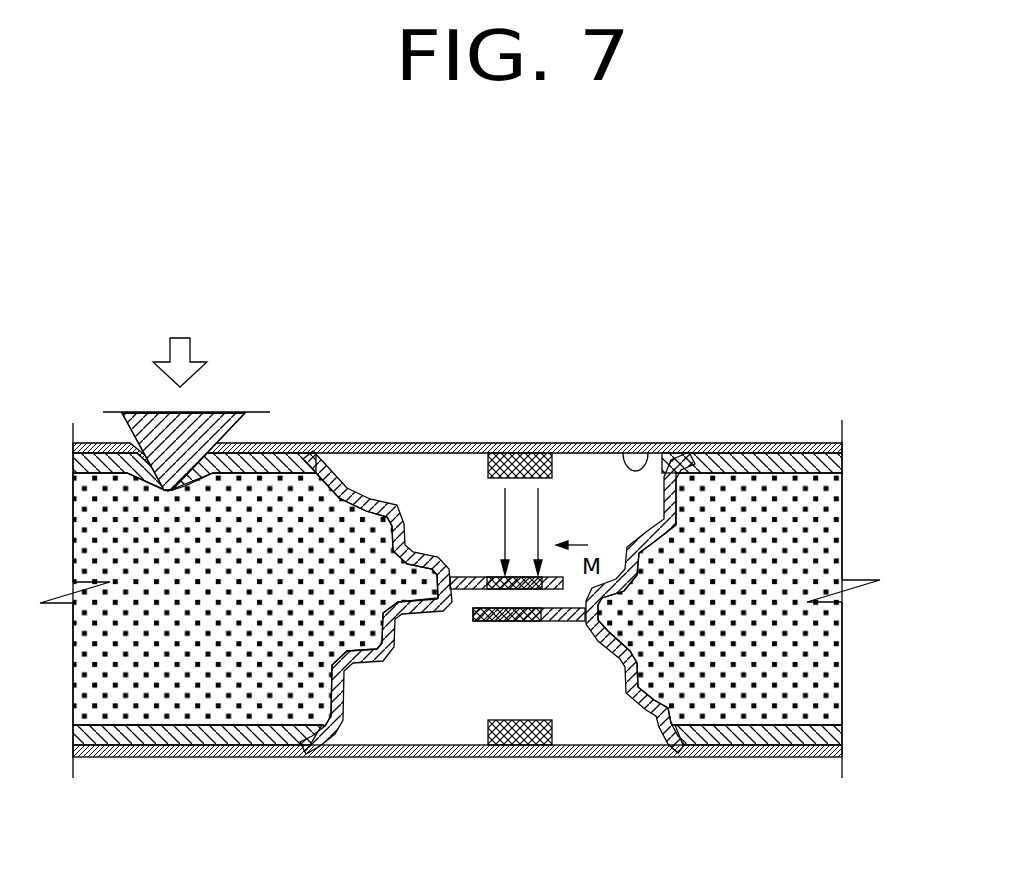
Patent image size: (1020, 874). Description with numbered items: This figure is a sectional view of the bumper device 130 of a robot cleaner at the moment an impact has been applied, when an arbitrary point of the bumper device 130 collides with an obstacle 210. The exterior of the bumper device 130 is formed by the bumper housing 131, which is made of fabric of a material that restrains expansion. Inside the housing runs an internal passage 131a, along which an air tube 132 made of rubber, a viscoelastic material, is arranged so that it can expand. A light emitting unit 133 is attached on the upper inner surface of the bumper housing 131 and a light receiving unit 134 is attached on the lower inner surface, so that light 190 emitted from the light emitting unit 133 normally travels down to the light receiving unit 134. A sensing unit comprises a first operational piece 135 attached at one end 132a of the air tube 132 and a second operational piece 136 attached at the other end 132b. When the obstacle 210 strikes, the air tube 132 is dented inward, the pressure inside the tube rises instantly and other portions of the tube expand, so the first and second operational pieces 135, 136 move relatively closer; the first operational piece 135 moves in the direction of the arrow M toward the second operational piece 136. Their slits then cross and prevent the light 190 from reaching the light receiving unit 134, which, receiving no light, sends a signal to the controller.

The bumper device 130 is at (805, 338).
The bumper housing 131 is at (457, 391).
The internal passage 131a is at (667, 470).
The air tube 132 is at (378, 505).
The one end of the air tube 132a is at (452, 608).
The other end of the air tube 132b is at (585, 636).
The light emitting unit 133 is at (518, 453).
The light receiving unit 134 is at (512, 746).
The first operational piece 135 is at (462, 592).
The second operational piece 136 is at (562, 622).
The light 190 is at (540, 505).
The obstacle 210 is at (140, 410).